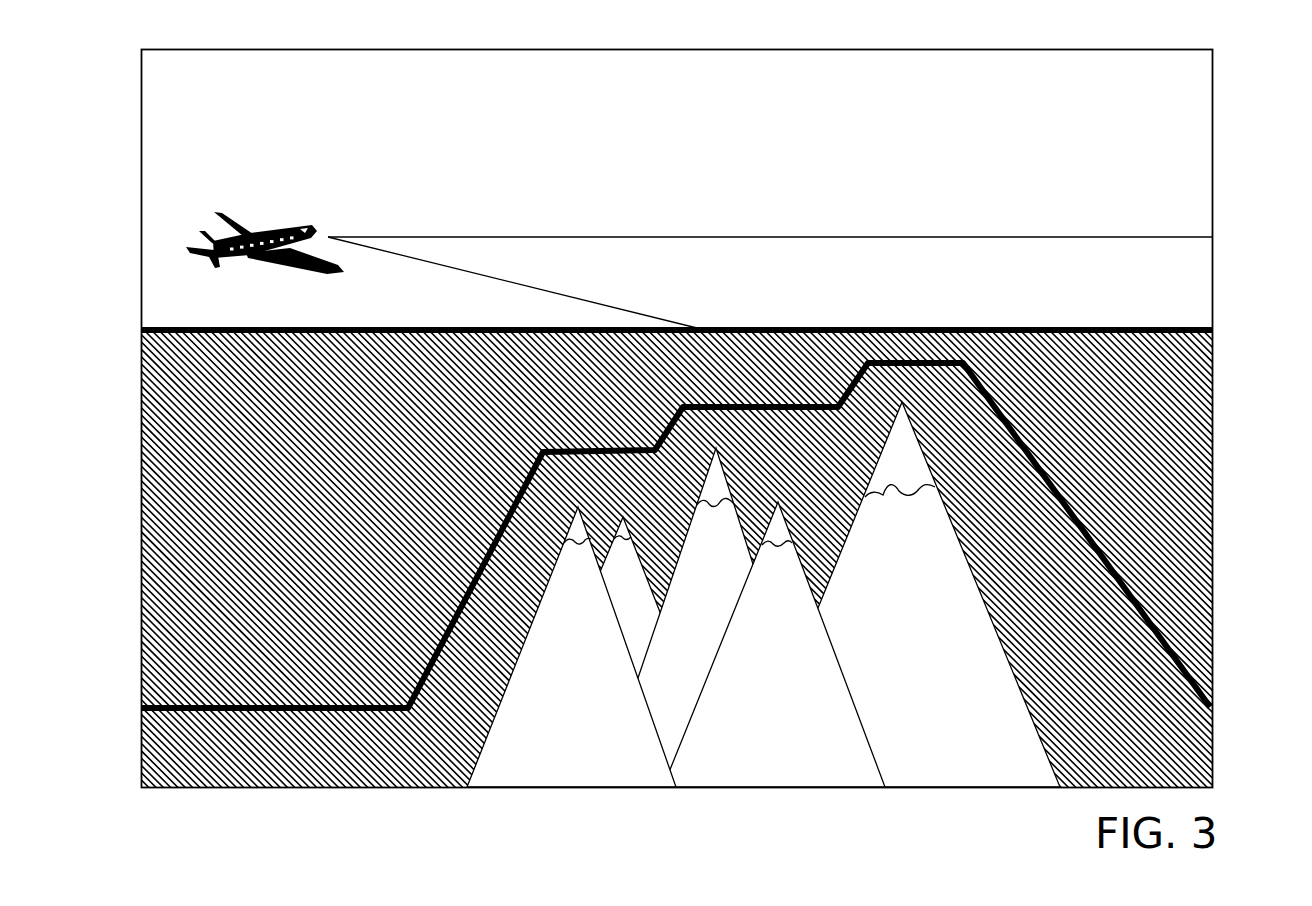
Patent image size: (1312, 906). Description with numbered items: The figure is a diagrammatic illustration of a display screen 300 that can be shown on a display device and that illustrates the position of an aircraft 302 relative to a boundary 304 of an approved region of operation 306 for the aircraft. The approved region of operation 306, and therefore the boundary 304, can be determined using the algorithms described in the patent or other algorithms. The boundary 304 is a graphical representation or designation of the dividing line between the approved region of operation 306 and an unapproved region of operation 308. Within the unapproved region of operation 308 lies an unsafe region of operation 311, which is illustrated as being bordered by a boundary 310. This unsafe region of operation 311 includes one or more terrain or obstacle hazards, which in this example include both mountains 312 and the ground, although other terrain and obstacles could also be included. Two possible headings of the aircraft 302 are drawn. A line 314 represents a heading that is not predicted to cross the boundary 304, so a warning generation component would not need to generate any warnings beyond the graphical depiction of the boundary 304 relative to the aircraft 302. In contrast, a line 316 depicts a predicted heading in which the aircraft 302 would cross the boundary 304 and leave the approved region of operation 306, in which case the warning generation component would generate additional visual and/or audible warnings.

The display screen 300 is at (1212, 108).
The aircraft 302 is at (281, 222).
The boundary 304 is at (1147, 328).
The approved region of operation 306 is at (1148, 180).
The unapproved region of operation 308 is at (1152, 410).
The boundary 310 is at (1160, 635).
The unsafe region of operation 311 is at (1200, 748).
The mountains 312 is at (568, 740).
The line 314 is at (562, 237).
The line 316 is at (587, 300).